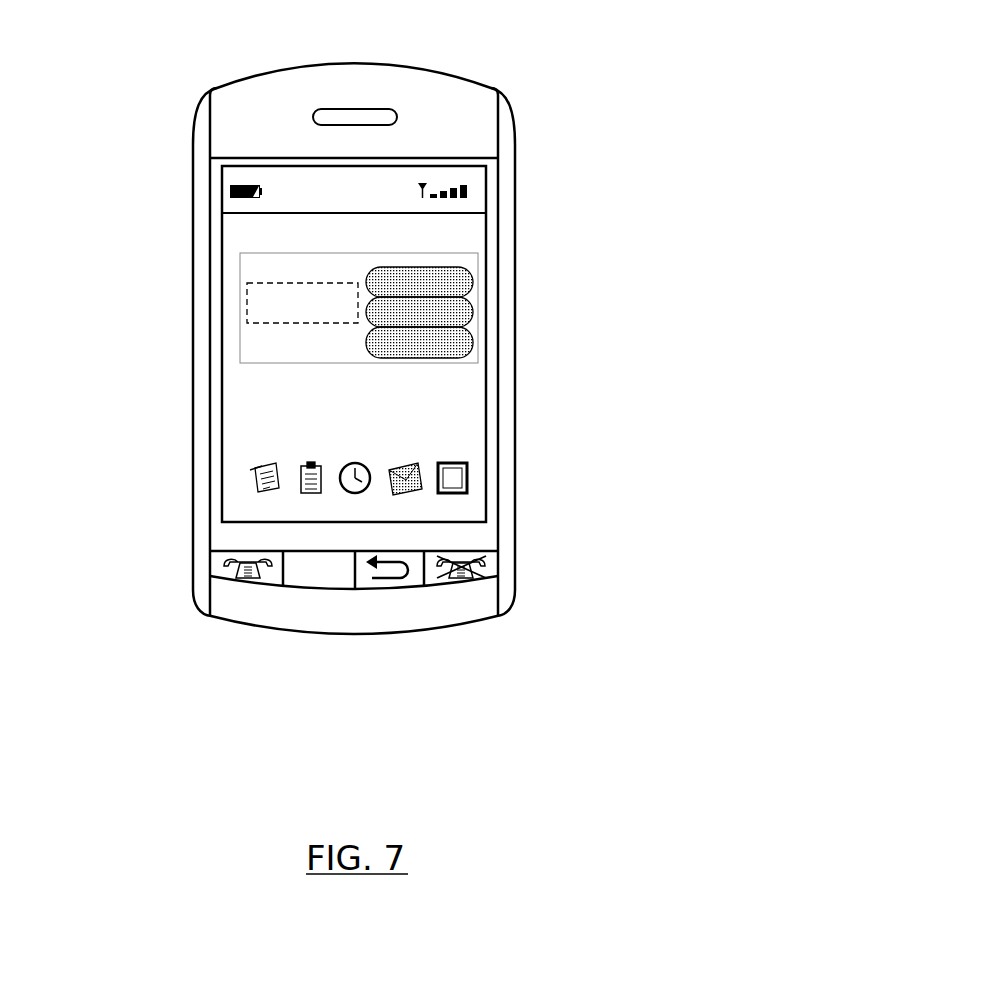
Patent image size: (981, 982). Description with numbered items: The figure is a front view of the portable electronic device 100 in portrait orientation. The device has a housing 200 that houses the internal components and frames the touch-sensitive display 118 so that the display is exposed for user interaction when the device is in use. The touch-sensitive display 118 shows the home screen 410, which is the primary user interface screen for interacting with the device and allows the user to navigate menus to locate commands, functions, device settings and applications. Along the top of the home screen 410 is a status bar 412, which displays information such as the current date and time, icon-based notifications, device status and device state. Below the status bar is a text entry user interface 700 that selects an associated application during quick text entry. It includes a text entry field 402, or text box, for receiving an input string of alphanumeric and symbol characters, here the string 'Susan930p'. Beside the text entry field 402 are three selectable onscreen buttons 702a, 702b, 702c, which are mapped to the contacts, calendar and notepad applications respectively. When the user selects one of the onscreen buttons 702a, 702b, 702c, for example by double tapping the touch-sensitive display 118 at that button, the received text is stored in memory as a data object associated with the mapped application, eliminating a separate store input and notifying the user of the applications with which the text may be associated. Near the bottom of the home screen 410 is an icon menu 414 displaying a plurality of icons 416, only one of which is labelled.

The portable electronic device 100 is at (335, 334).
The housing 200 is at (507, 242).
The touch-sensitive display 118 is at (335, 356).
The status bar 412 is at (480, 193).
The home screen 410 is at (372, 415).
The text entry user interface 700 is at (335, 332).
The text entry field 402 is at (302, 322).
The onscreen button 702a is at (473, 283).
The onscreen button 702b is at (473, 313).
The onscreen button 702c is at (473, 342).
The icon menu 414 is at (263, 505).
The icon 416 is at (253, 484).